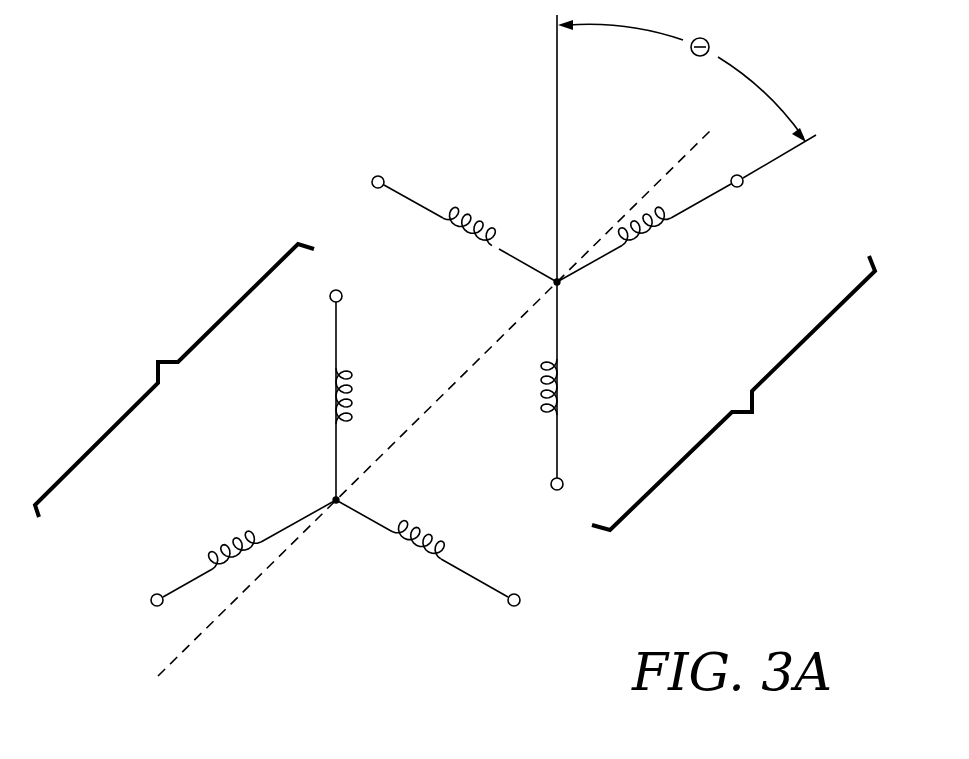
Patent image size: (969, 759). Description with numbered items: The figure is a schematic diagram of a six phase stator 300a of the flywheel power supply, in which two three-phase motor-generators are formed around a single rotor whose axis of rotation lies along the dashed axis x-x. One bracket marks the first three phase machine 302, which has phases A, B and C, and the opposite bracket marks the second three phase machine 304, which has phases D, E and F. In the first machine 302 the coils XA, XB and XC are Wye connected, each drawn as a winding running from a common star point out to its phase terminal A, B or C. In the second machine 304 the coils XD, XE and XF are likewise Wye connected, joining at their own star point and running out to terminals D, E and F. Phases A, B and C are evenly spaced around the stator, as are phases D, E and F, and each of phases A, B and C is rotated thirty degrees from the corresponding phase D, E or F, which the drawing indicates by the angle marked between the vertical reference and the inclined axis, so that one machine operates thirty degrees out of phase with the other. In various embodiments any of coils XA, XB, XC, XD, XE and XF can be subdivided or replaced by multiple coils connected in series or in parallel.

The six phase stator 300a is at (390, 84).
The first three phase machine 302 is at (752, 402).
The second three phase machine 304 is at (160, 362).
The coil XA is at (672, 245).
The coil XB is at (567, 378).
The coil XC is at (497, 212).
The coil XD is at (334, 404).
The coil XE is at (440, 548).
The coil XF is at (237, 534).